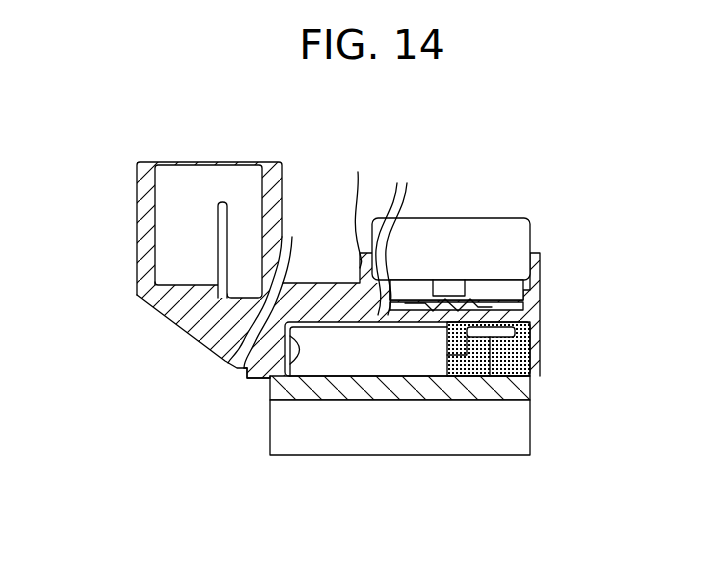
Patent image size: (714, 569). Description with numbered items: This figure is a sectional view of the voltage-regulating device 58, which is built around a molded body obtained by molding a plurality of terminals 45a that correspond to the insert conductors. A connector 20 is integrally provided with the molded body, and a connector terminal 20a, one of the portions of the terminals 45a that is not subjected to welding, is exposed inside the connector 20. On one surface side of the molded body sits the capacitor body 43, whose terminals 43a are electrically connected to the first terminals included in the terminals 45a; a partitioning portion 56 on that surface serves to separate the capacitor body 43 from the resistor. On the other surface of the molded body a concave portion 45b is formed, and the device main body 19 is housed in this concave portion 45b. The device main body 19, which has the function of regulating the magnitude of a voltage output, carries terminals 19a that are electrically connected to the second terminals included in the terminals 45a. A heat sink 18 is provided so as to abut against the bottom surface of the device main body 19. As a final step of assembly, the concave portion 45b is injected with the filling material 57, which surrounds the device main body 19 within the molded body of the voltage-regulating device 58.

The connector 20 is at (137, 225).
The connector terminal 20a is at (215, 207).
The partitioning portion 56 is at (374, 229).
The capacitor body 43 is at (502, 218).
The terminals 43a is at (453, 292).
The terminals 45a is at (500, 303).
The concave portion 45b is at (270, 378).
The filling material 57 is at (527, 382).
The voltage-regulating device 58 is at (193, 367).
The heat sink 18 is at (296, 389).
The device main body 19 is at (412, 355).
The terminals 19a is at (490, 347).